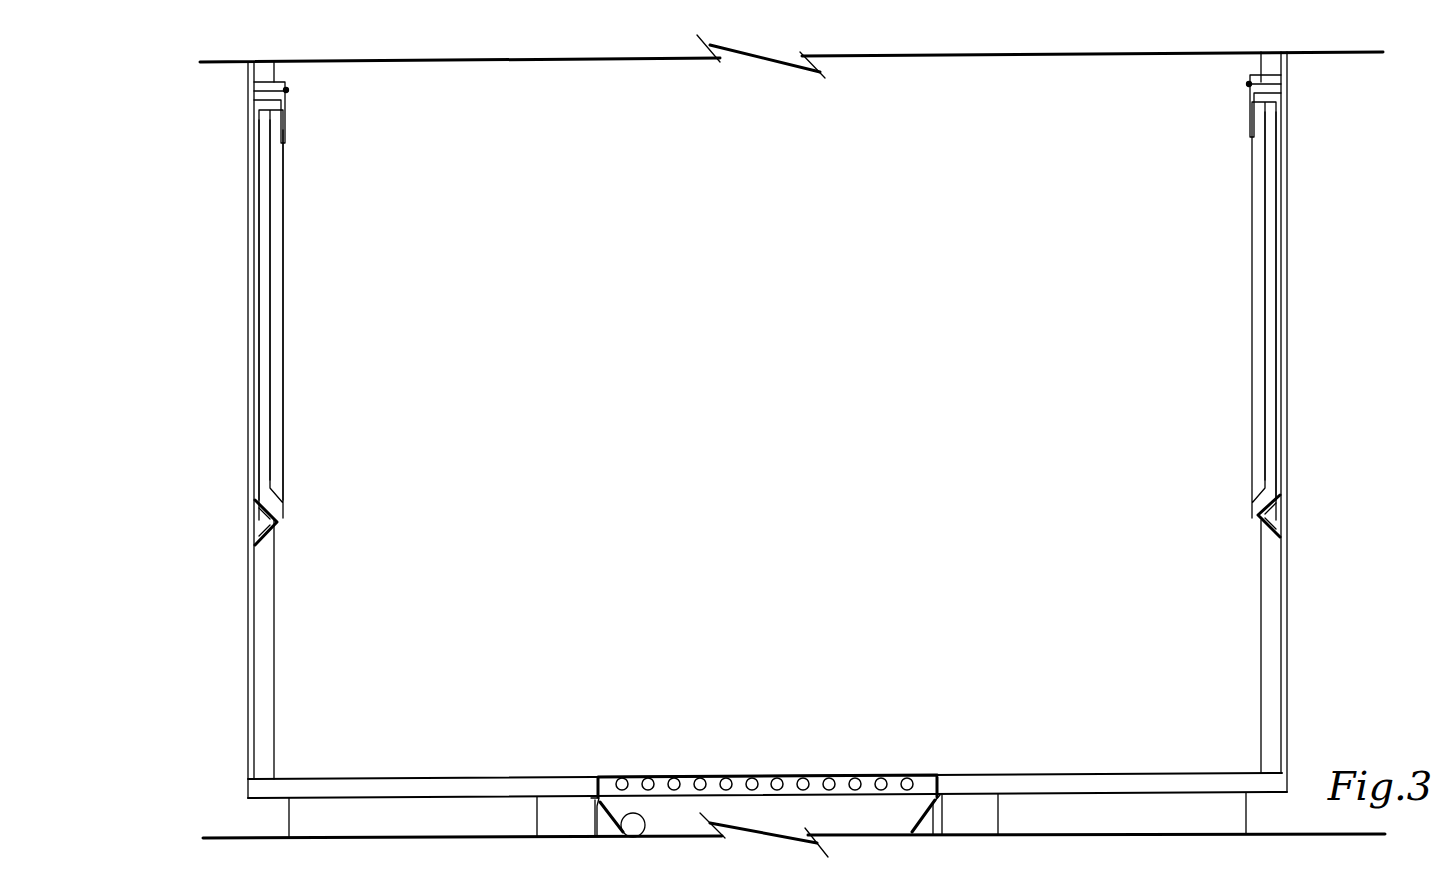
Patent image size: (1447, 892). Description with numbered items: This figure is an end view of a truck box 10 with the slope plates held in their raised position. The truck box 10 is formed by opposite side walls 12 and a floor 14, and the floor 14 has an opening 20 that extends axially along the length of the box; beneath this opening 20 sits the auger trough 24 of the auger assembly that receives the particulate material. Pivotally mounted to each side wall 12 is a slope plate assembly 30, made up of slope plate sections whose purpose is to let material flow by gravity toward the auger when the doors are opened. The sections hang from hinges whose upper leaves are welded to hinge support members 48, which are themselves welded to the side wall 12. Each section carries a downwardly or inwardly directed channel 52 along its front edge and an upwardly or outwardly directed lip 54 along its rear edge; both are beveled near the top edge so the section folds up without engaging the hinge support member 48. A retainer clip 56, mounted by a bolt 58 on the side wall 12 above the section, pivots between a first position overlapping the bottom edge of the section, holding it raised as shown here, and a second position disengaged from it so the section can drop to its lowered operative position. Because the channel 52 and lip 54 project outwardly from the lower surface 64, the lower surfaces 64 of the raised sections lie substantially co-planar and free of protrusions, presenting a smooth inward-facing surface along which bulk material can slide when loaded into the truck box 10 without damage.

The truck box 10 is at (792, 126).
The side wall 12 is at (247, 135).
The floor 14 is at (1185, 773).
The opening 20 is at (598, 777).
The auger trough 24 is at (643, 838).
The slope plate assembly 30 is at (285, 245).
The hinge support member 48 is at (255, 527).
The channel 52 is at (260, 265).
The lip 54 is at (275, 292).
The retainer clip 56 is at (287, 113).
The bolt 58 is at (287, 88).
The lower surface 64 is at (285, 338).